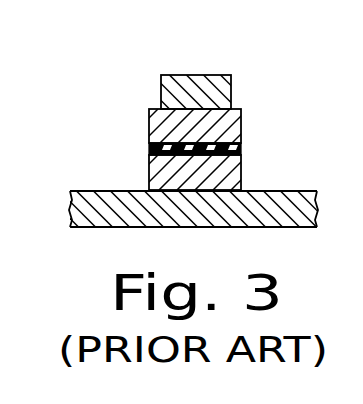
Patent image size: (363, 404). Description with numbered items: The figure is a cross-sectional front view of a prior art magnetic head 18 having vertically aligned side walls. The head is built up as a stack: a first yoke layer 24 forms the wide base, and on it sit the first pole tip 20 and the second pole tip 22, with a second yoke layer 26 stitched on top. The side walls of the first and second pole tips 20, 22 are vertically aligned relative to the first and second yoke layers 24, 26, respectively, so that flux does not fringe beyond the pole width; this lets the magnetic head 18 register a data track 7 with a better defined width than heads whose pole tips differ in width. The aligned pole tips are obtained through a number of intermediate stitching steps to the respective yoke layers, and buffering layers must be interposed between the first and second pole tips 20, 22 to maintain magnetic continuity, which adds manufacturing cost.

The magnetic head 18 is at (92, 77).
The second yoke layer 26 is at (207, 88).
The second pole tip 22 is at (150, 124).
The first pole tip 20 is at (152, 176).
The first yoke layer 24 is at (140, 212).
The data track 7 is at (362, 137).